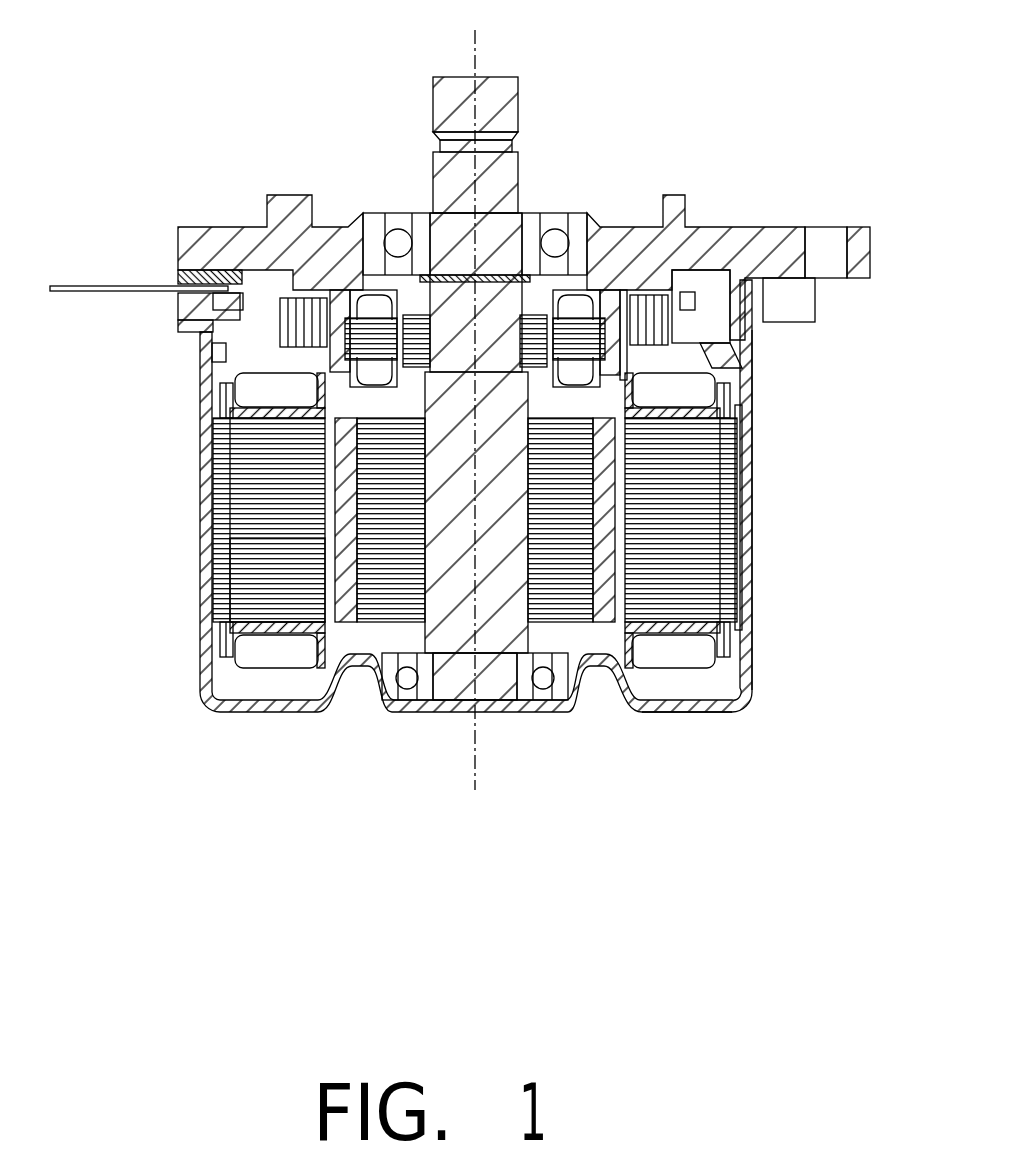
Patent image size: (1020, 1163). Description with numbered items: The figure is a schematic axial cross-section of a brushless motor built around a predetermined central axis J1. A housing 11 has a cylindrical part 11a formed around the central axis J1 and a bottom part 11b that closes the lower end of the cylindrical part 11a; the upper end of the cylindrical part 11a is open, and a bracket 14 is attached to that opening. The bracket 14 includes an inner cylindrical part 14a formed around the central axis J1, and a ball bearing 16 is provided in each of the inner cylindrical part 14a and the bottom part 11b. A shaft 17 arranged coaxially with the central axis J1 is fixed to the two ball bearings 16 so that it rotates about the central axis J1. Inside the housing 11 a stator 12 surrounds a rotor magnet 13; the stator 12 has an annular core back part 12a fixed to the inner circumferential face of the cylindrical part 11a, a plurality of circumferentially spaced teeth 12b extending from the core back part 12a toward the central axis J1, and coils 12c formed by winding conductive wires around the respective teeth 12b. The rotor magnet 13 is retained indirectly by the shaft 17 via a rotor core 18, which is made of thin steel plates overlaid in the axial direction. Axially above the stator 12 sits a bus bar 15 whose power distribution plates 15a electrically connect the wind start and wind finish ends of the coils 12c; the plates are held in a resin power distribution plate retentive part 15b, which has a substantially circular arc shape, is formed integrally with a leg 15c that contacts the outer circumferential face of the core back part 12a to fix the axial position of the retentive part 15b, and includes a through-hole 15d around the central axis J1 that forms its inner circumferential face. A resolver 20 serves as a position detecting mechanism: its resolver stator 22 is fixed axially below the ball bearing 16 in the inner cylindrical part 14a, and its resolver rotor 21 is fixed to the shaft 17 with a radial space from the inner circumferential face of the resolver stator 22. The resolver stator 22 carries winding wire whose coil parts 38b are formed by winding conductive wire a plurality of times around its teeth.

The central axis J1 is at (478, 44).
The housing 11 is at (770, 624).
The cylindrical part 11a is at (748, 533).
The bottom part 11b is at (655, 708).
The stator 12 is at (250, 674).
The core back part 12a is at (212, 527).
The teeth 12b is at (270, 573).
The coils 12c is at (247, 648).
The rotor magnet 13 is at (345, 604).
The bracket 14 is at (216, 198).
The inner cylindrical part 14a is at (727, 438).
The bus bar 15 is at (700, 322).
The power distribution plates 15a is at (692, 293).
The power distribution plate retentive part 15b is at (624, 378).
The leg 15c is at (733, 378).
The through-hole 15d is at (330, 326).
The ball bearing 16 is at (555, 222).
The shaft 17 is at (457, 607).
The rotor core 18 is at (383, 600).
The resolver 20 is at (418, 296).
The resolver rotor 21 is at (568, 290).
The resolver stator 22 is at (353, 392).
The coil parts 38b is at (203, 372).